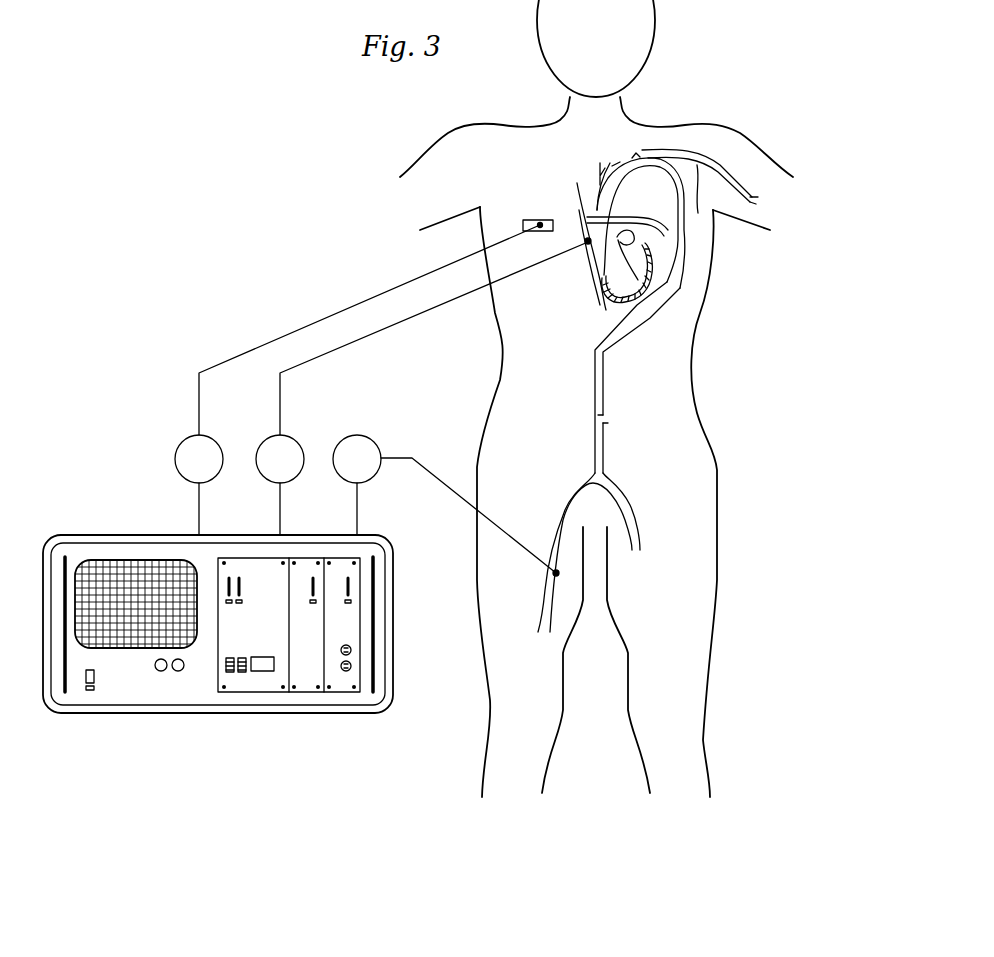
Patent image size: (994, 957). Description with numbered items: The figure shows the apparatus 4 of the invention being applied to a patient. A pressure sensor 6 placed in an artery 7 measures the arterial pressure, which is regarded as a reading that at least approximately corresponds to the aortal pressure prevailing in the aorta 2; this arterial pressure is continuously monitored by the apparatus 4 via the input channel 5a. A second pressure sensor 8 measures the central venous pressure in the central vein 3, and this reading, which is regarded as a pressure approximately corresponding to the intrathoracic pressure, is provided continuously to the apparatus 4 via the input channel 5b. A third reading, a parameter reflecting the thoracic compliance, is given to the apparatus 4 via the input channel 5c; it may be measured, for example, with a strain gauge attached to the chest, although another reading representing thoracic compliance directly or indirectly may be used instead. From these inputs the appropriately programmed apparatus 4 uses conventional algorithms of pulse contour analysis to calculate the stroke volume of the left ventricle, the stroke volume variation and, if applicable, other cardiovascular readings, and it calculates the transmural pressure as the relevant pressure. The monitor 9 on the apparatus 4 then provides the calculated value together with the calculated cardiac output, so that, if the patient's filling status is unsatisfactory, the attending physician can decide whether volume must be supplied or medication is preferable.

The aorta 2 is at (598, 188).
The central vein 3 is at (593, 256).
The apparatus 4 is at (128, 680).
The input channel 5a is at (357, 512).
The input channel 5b is at (279, 512).
The input channel 5c is at (199, 505).
The pressure sensor 6 is at (367, 445).
The artery 7 is at (550, 587).
The pressure sensor 8 is at (296, 441).
The monitor 9 is at (116, 588).